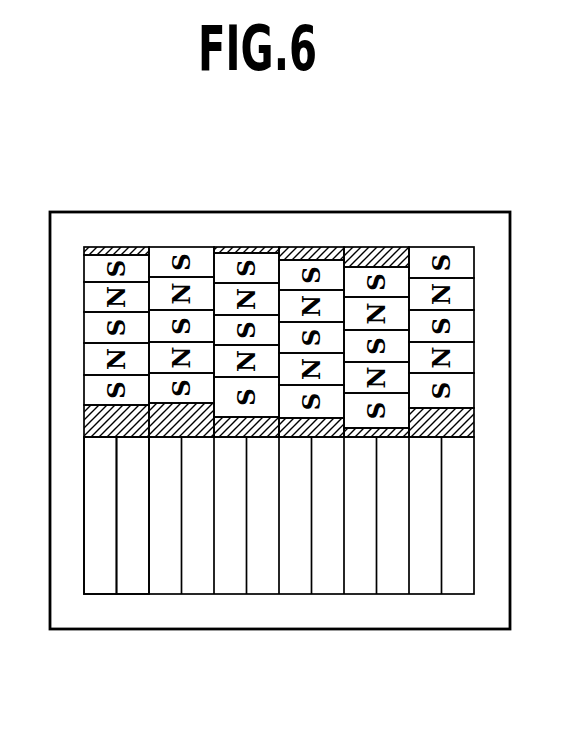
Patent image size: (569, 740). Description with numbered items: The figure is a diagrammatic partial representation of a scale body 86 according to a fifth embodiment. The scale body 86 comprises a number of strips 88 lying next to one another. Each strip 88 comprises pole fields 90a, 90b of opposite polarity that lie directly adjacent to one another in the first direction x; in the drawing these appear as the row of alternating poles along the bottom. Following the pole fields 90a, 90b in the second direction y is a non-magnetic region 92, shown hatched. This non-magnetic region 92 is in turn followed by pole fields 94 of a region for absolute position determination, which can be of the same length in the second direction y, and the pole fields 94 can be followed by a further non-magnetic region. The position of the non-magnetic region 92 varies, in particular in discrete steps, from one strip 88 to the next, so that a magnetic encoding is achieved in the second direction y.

The scale body 86 is at (467, 595).
The strip 88 is at (260, 565).
The pole field 90a is at (93, 545).
The pole field 90b is at (130, 543).
The non-magnetic region 92 is at (463, 424).
The pole fields of a region for absolute position determination 94 is at (382, 248).